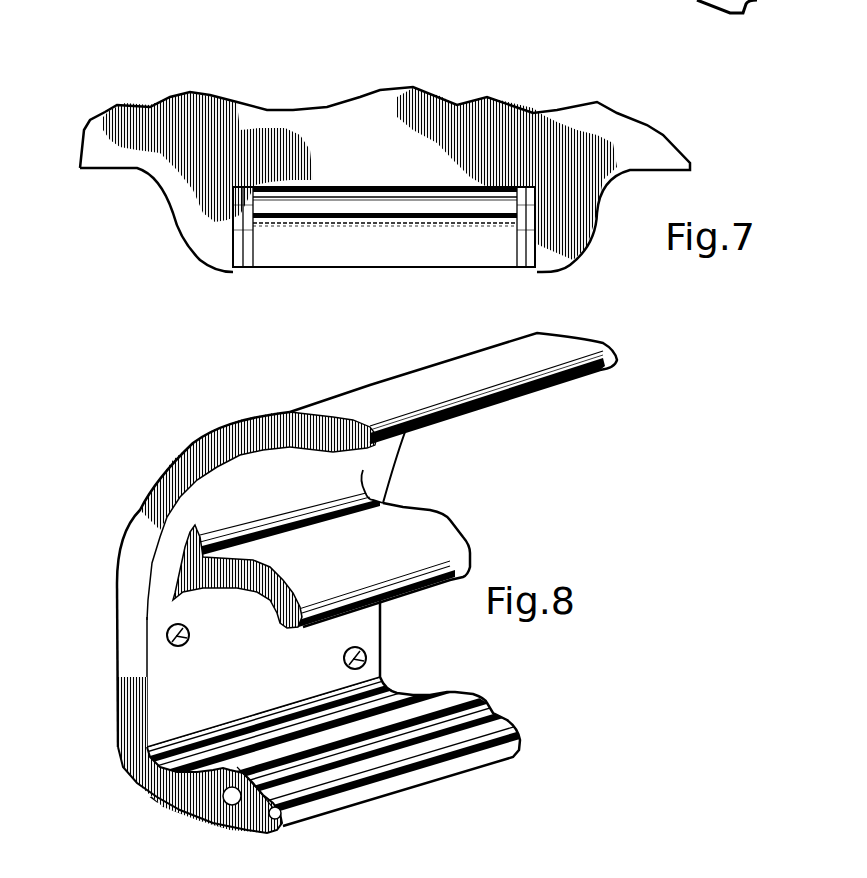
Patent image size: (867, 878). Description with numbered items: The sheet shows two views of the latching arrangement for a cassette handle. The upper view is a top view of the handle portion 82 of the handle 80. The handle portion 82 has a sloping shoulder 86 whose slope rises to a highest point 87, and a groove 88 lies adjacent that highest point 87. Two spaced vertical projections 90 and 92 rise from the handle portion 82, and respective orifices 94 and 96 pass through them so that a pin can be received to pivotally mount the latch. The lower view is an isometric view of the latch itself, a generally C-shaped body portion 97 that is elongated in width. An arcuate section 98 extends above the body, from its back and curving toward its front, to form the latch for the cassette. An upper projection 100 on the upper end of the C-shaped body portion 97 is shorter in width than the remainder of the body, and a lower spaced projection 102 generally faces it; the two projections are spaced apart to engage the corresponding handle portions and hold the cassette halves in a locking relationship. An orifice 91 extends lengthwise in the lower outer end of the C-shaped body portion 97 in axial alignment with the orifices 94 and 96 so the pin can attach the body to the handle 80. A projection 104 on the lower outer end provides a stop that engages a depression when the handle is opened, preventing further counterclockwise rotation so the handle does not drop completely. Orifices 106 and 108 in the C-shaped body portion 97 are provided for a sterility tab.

In FIG. 7, the handle 80 is at (300, 100).
In FIG. 7, the handle portion 82 is at (393, 182).
In FIG. 7, the sloping shoulder 86 is at (438, 257).
In FIG. 7, the highest point 87 is at (317, 227).
In FIG. 7, the groove 88 is at (363, 207).
In FIG. 7, the spaced vertical projection 90 is at (237, 242).
In FIG. 7, the spaced vertical projection 92 is at (527, 248).
In FIG. 7, the orifice 94 is at (240, 220).
In FIG. 7, the orifice 96 is at (530, 217).
In FIG. 8, the C-shaped body portion 97 is at (117, 692).
In FIG. 8, the arcuate section 98 is at (250, 417).
In FIG. 8, the upper projection 100 is at (425, 598).
In FIG. 8, the spaced projection 102 is at (245, 763).
In FIG. 8, the projection 104 is at (283, 826).
In FIG. 8, the orifice 91 is at (228, 797).
In FIG. 8, the orifice 106 is at (190, 637).
In FIG. 8, the orifice 108 is at (367, 660).